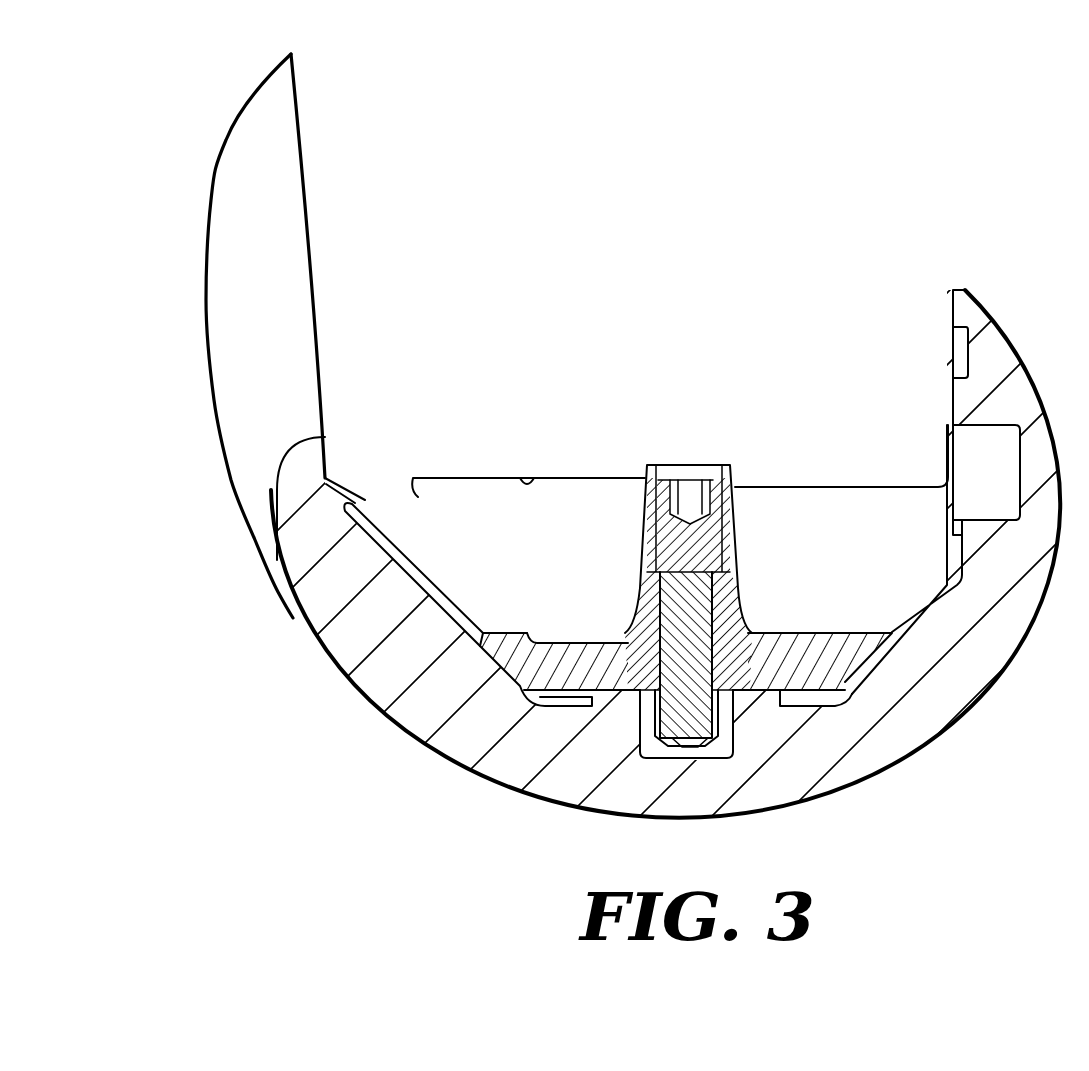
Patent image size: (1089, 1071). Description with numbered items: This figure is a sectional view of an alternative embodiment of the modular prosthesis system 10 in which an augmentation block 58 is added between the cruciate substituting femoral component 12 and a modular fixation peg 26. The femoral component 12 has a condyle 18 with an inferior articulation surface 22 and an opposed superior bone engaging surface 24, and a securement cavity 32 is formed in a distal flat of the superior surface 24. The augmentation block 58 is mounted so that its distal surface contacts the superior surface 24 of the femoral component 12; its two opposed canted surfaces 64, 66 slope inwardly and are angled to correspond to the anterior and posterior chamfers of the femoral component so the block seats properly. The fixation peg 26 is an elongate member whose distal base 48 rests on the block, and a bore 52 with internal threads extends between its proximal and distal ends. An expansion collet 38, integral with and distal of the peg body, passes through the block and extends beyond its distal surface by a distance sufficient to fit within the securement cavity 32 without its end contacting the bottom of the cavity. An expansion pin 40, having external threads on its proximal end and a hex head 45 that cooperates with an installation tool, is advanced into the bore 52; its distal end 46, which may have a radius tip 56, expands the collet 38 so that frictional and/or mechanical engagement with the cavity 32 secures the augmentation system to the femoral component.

The prosthesis system 10 is at (245, 693).
The cruciate substituting femoral component 12 is at (276, 578).
The condyle 18 is at (952, 697).
The inferior articulation surface 22 is at (920, 747).
The superior bone engaging surface 24 is at (818, 708).
The fixation peg 26 is at (735, 522).
The securement cavity 32 is at (652, 758).
The expansion collet 38 is at (645, 732).
The expansion pin 40 is at (700, 567).
The hex head 45 is at (690, 497).
The distal end of expansion pin 46 is at (686, 758).
The distal base 48 is at (760, 647).
The bore 52 is at (713, 598).
The radius tip 56 is at (722, 745).
The augmentation block 58 is at (523, 640).
The canted surface 64 is at (507, 677).
The canted surface 66 is at (873, 658).